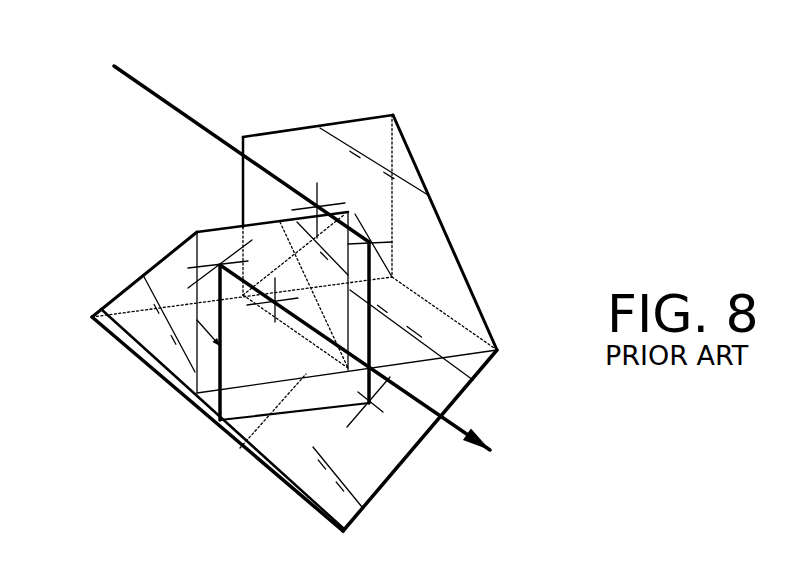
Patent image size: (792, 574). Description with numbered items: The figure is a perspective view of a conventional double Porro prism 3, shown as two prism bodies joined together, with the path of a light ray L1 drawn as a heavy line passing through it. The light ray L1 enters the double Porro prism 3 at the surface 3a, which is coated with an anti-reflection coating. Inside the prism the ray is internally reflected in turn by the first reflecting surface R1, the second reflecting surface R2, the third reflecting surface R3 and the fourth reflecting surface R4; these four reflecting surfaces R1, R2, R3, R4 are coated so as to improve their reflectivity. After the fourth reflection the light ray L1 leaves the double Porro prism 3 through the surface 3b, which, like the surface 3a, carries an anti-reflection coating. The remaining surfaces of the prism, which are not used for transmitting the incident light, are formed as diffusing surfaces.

The light ray L1 is at (150, 91).
The double Porro prism 3 is at (471, 141).
The surface 3a is at (350, 138).
The surface 3b is at (244, 356).
The first reflecting surface R1 is at (440, 250).
The second reflecting surface R2 is at (378, 458).
The third reflecting surface R3 is at (250, 452).
The fourth reflecting surface R4 is at (167, 287).